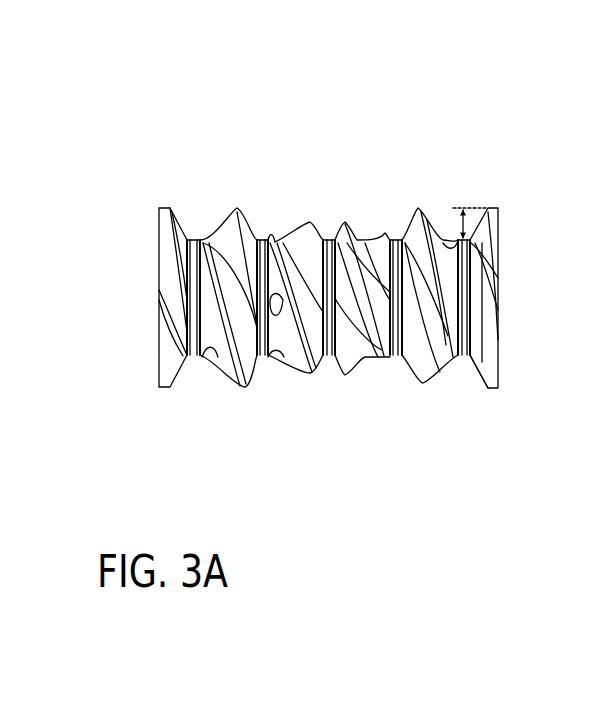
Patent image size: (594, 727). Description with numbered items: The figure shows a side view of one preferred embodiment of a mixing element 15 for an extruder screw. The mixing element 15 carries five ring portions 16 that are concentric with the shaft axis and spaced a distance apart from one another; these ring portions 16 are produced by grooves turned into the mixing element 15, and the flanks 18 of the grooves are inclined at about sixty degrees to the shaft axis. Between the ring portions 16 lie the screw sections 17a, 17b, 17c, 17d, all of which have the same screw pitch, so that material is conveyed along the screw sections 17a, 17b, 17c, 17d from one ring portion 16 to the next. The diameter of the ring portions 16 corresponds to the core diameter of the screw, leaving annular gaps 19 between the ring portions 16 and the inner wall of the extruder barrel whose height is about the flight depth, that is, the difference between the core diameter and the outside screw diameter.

The mixing element 15 is at (222, 160).
The ring portions 16 is at (463, 357).
The screw section 17a is at (213, 213).
The screw section 17b is at (301, 213).
The screw section 17c is at (377, 216).
The screw section 17d is at (427, 196).
The flanks of the grooves 18 is at (478, 370).
The annular gaps 19 is at (469, 209).